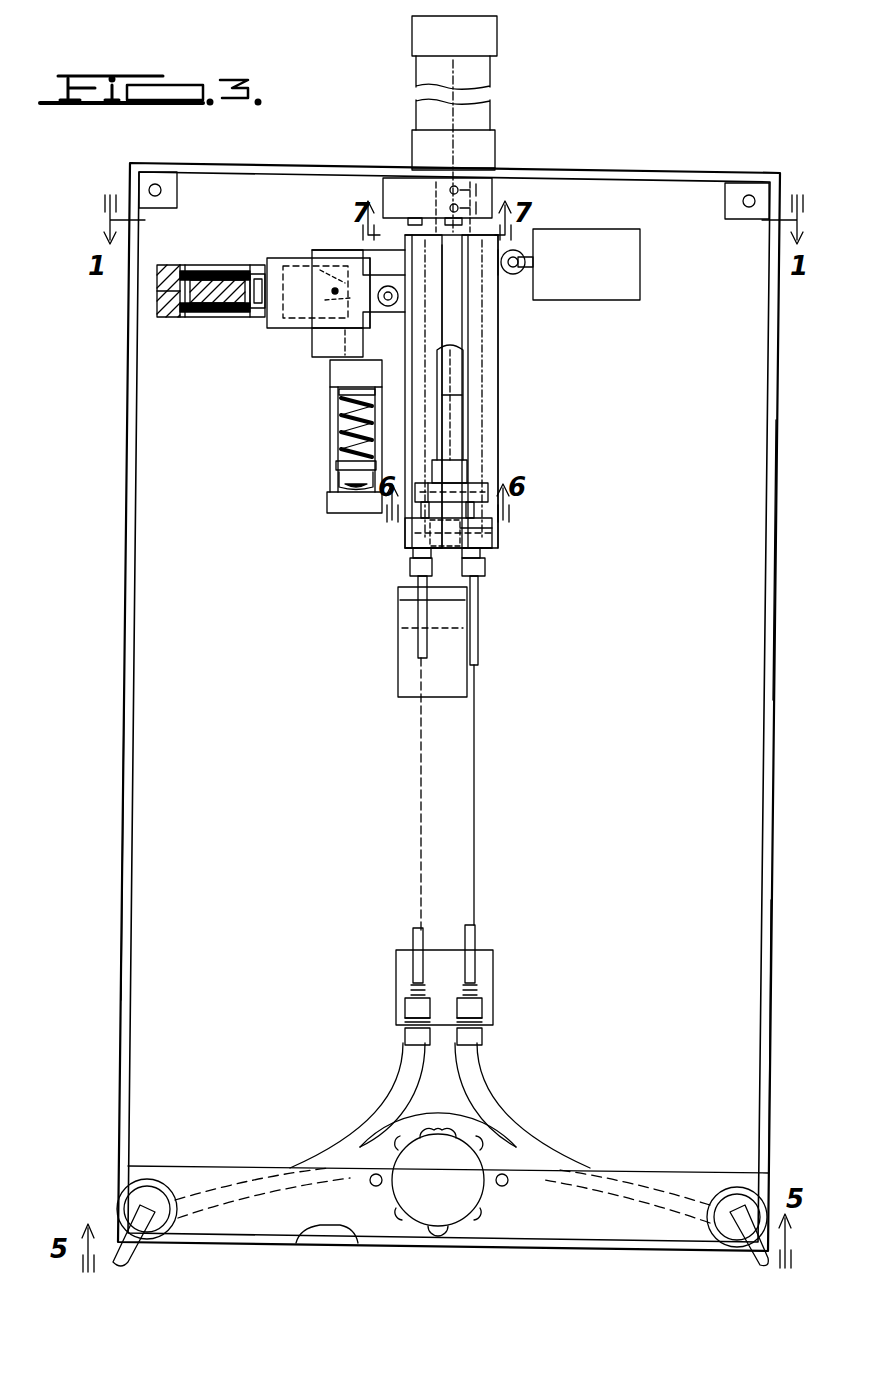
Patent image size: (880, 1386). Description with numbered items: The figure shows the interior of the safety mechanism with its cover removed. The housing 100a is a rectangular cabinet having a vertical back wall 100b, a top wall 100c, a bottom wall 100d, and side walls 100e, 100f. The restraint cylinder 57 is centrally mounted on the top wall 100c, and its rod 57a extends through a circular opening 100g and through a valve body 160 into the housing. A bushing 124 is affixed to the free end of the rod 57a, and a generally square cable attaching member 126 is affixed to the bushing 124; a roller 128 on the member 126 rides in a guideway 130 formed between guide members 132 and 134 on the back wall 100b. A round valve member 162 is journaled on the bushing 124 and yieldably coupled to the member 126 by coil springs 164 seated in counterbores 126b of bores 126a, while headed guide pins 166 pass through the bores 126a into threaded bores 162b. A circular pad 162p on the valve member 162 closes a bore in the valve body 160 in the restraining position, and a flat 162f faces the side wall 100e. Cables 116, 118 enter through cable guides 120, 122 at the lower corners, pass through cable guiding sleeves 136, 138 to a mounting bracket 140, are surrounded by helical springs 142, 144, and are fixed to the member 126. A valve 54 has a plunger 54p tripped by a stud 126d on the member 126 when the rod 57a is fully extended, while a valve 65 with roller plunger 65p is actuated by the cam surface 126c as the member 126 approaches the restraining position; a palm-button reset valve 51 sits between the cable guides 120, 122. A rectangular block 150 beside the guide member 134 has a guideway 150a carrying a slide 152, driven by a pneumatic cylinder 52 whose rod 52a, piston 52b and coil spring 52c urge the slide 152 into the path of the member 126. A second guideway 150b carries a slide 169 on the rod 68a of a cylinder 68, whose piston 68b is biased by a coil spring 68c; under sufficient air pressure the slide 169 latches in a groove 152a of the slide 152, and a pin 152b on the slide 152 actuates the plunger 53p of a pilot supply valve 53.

The restraint cylinder 57 is at (497, 110).
The cylinder rod 57a is at (455, 384).
The housing 100a is at (742, 173).
The back wall 100b is at (770, 430).
The top wall 100c is at (644, 173).
The bottom wall 100d is at (312, 1247).
The side wall 100e is at (126, 556).
The side wall 100f is at (772, 515).
The circular opening 100g is at (502, 134).
The valve body 160 is at (472, 200).
The valve member 162 is at (508, 235).
The threaded bores 162b is at (428, 483).
The flat 162f is at (462, 395).
The circular pad 162p is at (452, 478).
The valve 65 is at (636, 229).
The roller-type plunger 65p is at (530, 272).
The pneumatic cylinder 52 is at (203, 320).
The cylinder rod 52a is at (290, 270).
The piston 52b is at (225, 320).
The coil spring 52c is at (215, 265).
The pilot supply valve 53 is at (262, 320).
The plunger 53p is at (363, 296).
The rectangular block 150 is at (300, 330).
The guideway 150a is at (358, 319).
The second guideway 150b is at (330, 357).
The slide 152 is at (338, 262).
The groove 152a is at (322, 252).
The pin 152b is at (390, 286).
The bushing 124 is at (500, 452).
The cable attaching member 126 is at (499, 282).
The bore 126a is at (497, 548).
The counterbore 126b is at (520, 522).
The cam surface 126c is at (500, 530).
The stud 126d is at (460, 582).
The roller 128 is at (486, 572).
The guideway 130 is at (455, 330).
The guide member 132 is at (497, 360).
The guide member 134 is at (499, 396).
The headed guide pins 166 is at (470, 500).
The coil spring 164 is at (375, 513).
The cylinder 68 is at (330, 500).
The cylinder rod 68a is at (336, 466).
The piston 68b is at (338, 480).
The coil spring 68c is at (338, 440).
The slide 169 is at (338, 414).
The valve 54 is at (450, 615).
The plunger 54p is at (440, 597).
The mounting bracket 140 is at (495, 1020).
The helical spring 142 is at (482, 988).
The helical spring 144 is at (410, 990).
The cable guiding sleeve 136 is at (495, 1092).
The cable guiding sleeve 138 is at (400, 1086).
The reset valve 51 is at (390, 1184).
The cable guide 122 is at (170, 1190).
The cable guide 120 is at (730, 1190).
The cable 118 is at (115, 1212).
The cable 116 is at (745, 1258).